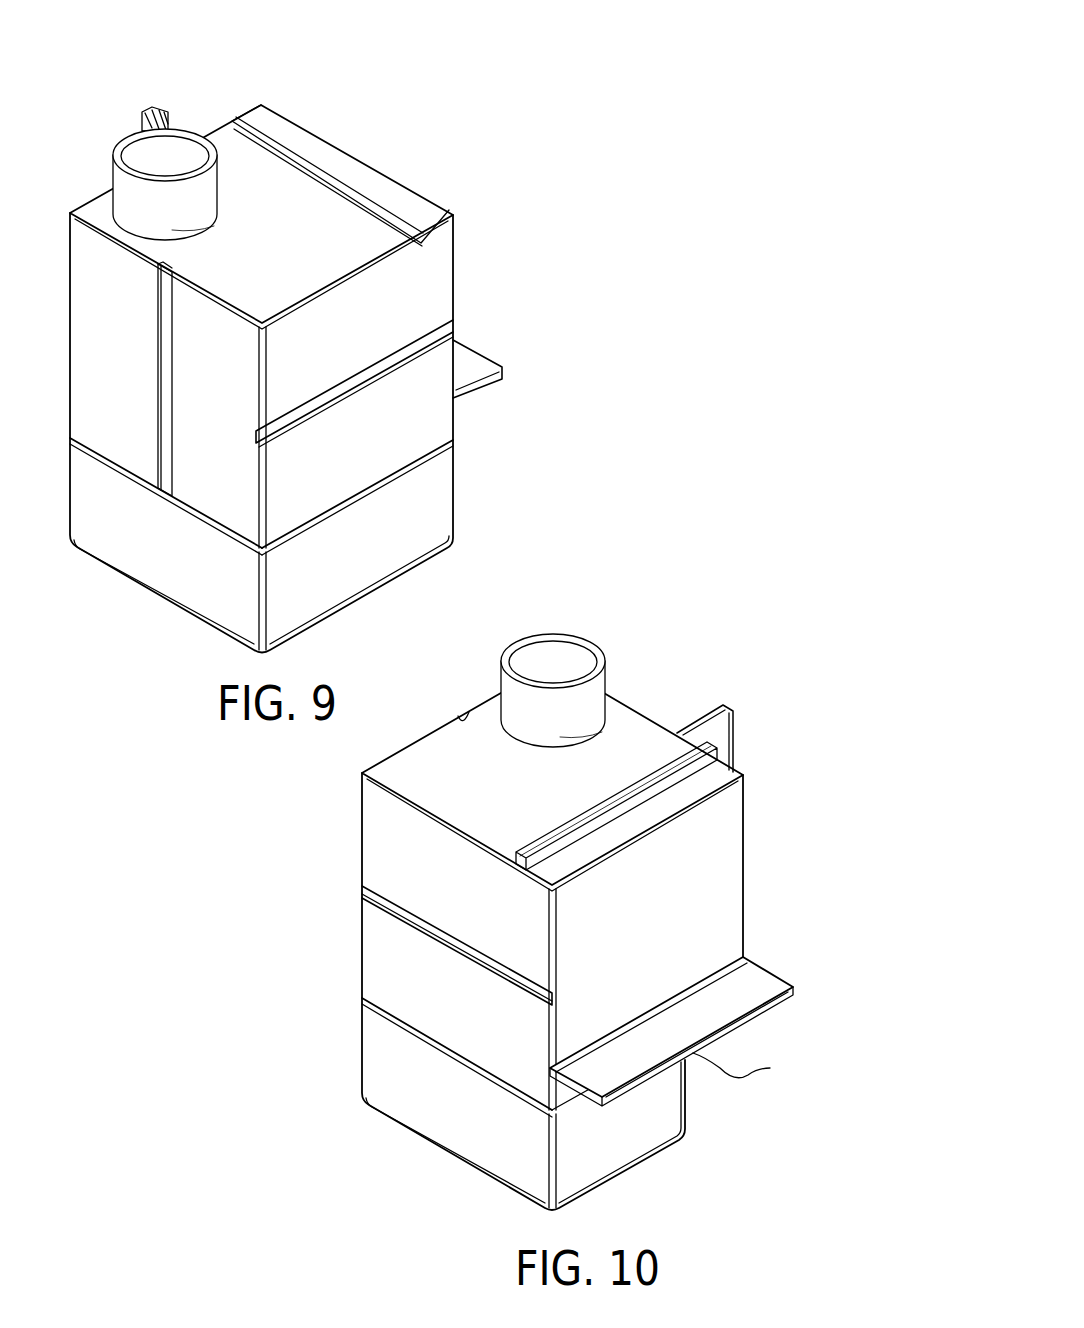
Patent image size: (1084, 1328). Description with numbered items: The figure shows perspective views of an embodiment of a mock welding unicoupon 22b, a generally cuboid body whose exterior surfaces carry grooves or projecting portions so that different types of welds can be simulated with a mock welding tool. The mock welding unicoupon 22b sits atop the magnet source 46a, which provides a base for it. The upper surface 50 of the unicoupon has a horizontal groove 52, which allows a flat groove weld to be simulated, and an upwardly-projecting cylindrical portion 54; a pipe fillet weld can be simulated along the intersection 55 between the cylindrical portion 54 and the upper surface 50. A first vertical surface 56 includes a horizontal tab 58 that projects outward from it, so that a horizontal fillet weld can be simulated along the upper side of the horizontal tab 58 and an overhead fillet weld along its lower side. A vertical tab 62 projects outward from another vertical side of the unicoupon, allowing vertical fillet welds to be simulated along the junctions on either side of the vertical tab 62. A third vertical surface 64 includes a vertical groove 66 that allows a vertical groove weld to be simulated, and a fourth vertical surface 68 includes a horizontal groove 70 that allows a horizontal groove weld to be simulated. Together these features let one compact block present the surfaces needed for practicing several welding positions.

In FIG. 9, the mock welding unicoupon 22b is at (289, 332).
In FIG. 10, the mock welding unicoupon 22b is at (539, 874).
In FIG. 9, the magnet source 46a is at (455, 493).
In FIG. 10, the magnet source 46a is at (660, 1152).
In FIG. 9, the upper surface 50 is at (284, 243).
In FIG. 10, the upper surface 50 is at (562, 809).
In FIG. 9, the horizontal groove 52 is at (388, 210).
In FIG. 10, the horizontal groove 52 is at (698, 760).
In FIG. 9, the cylindrical portion 54 is at (127, 150).
In FIG. 10, the cylindrical portion 54 is at (575, 636).
In FIG. 9, the intersection 55 is at (189, 243).
In FIG. 10, the intersection 55 is at (521, 738).
In FIG. 10, the first vertical surface 56 is at (672, 899).
In FIG. 9, the horizontal tab 58 is at (488, 362).
In FIG. 10, the horizontal tab 58 is at (765, 968).
In FIG. 9, the vertical tab 62 is at (165, 110).
In FIG. 10, the vertical tab 62 is at (723, 704).
In FIG. 9, the third vertical surface 64 is at (222, 441).
In FIG. 9, the vertical groove 66 is at (162, 387).
In FIG. 10, the vertical groove 66 is at (462, 718).
In FIG. 9, the fourth vertical surface 68 is at (369, 449).
In FIG. 10, the fourth vertical surface 68 is at (459, 893).
In FIG. 9, the horizontal groove 70 is at (446, 330).
In FIG. 10, the horizontal groove 70 is at (362, 890).